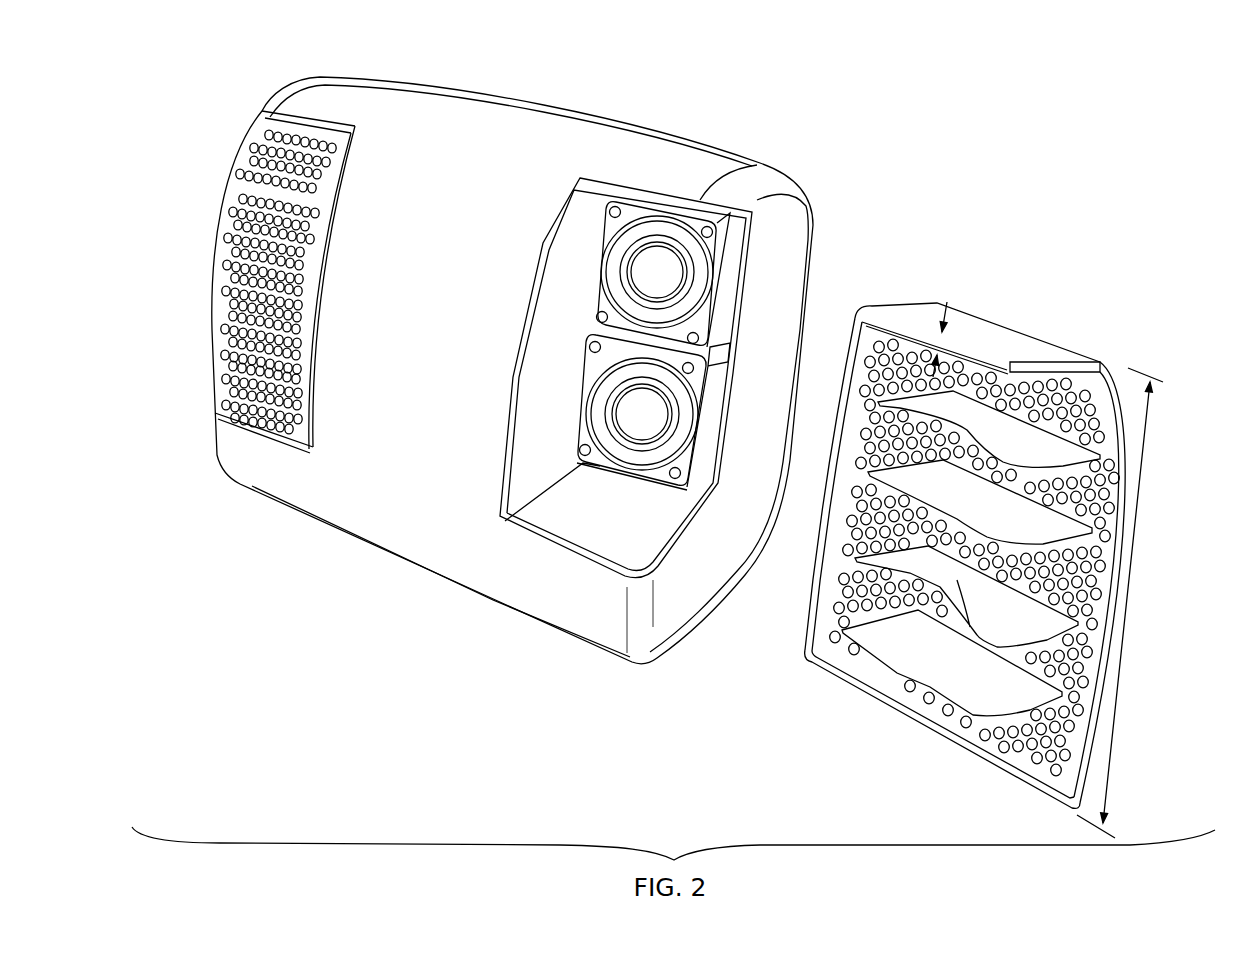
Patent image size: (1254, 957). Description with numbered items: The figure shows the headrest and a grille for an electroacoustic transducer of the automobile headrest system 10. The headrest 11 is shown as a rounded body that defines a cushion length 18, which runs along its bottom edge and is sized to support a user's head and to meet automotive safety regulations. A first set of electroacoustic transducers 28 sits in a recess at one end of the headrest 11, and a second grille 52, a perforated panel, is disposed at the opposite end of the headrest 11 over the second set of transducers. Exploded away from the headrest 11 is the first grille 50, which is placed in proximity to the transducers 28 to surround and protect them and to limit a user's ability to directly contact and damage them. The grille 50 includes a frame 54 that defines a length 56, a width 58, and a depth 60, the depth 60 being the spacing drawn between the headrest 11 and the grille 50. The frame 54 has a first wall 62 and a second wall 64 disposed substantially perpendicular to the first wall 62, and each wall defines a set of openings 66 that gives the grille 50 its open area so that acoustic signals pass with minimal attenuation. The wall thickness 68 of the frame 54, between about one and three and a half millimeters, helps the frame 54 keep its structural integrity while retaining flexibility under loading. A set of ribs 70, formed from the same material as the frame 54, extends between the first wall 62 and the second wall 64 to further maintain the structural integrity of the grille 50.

The automobile headrest system 10 is at (907, 133).
The headrest 11 is at (313, 86).
The cushion length 18 is at (617, 658).
The first set of electroacoustic transducers 28 is at (730, 237).
The first grille 50 is at (1153, 496).
The second grille 52 is at (220, 128).
The frame 54 is at (1057, 353).
The length 56 is at (1128, 577).
The width 58 is at (1033, 832).
The depth 60 is at (930, 295).
The first wall 62 is at (1060, 775).
The second wall 64 is at (808, 608).
The set of openings 66 is at (1092, 384).
The wall thickness 68 is at (947, 302).
The set of ribs 70 is at (913, 673).